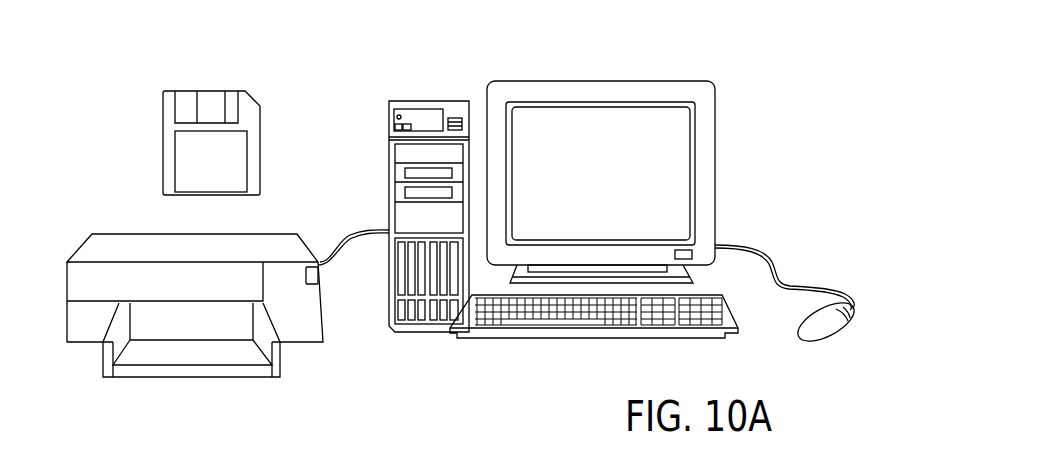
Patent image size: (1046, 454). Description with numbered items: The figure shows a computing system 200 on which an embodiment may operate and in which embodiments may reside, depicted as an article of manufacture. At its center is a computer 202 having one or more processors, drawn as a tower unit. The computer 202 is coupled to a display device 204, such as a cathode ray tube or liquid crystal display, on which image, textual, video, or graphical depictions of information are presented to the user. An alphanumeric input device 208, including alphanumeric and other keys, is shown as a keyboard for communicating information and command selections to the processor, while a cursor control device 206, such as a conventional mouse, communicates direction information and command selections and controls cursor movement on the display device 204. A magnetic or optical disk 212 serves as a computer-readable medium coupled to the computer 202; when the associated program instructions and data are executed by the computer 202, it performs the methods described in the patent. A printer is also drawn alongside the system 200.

The computer system 200 is at (135, 70).
The computer 202 is at (433, 97).
The display device 204 is at (587, 81).
The cursor control device 206 is at (829, 337).
The alphanumeric input device 208 is at (508, 330).
The magnetic or optical disk 212 is at (163, 137).